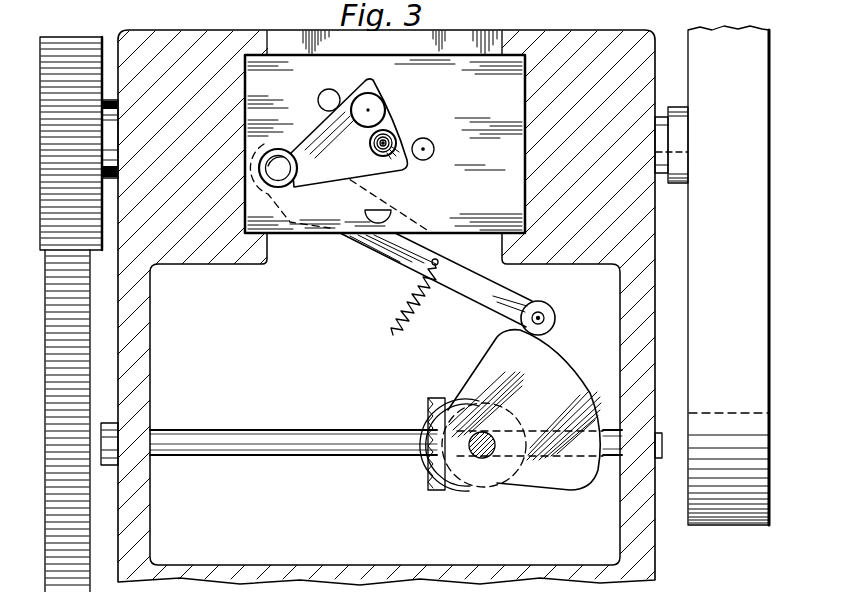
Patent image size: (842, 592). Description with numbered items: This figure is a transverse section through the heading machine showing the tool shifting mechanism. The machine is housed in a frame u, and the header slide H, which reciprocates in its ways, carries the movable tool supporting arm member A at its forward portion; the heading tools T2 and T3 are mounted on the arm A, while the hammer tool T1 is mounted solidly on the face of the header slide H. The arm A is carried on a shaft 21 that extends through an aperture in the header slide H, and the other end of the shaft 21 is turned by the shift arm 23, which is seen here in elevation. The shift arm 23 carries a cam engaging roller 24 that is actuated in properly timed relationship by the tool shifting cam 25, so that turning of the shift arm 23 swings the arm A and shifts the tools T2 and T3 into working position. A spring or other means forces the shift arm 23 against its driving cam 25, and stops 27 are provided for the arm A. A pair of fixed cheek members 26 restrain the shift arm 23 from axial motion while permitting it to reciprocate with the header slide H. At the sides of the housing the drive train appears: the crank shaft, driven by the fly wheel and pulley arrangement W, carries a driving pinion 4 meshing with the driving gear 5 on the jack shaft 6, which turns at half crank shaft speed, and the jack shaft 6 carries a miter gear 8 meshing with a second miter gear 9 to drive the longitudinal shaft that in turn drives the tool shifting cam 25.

The driving pinion 4 is at (58, 42).
The driving gear 5 is at (84, 353).
The jack shaft 6 is at (252, 440).
The miter gear 8 is at (431, 484).
The second miter gear 9 is at (485, 489).
The shaft 21 is at (288, 187).
The shift arm 23 is at (383, 256).
The cam engaging roller 24 is at (556, 315).
The tool shifting cam 25 is at (565, 397).
The fixed cheek members 26 is at (412, 333).
The stops 27 is at (318, 100).
The tool supporting arm member A is at (349, 133).
The header slide H is at (505, 211).
The hammer tool T1 is at (432, 154).
The tool T2 is at (389, 137).
The tool T3 is at (374, 106).
The fly wheel and pulley arrangement W is at (747, 253).
The frame u is at (628, 34).